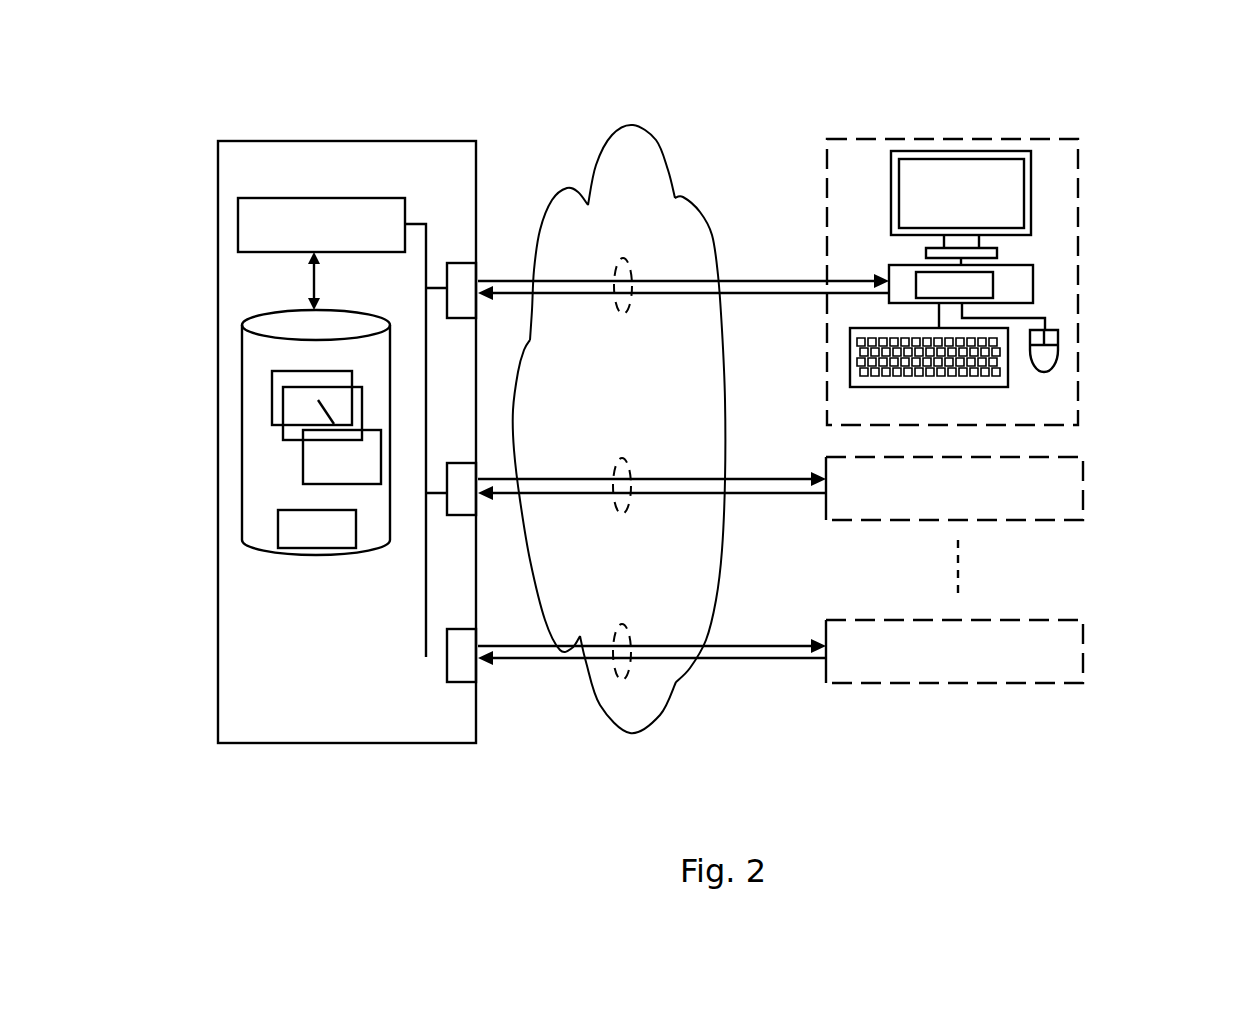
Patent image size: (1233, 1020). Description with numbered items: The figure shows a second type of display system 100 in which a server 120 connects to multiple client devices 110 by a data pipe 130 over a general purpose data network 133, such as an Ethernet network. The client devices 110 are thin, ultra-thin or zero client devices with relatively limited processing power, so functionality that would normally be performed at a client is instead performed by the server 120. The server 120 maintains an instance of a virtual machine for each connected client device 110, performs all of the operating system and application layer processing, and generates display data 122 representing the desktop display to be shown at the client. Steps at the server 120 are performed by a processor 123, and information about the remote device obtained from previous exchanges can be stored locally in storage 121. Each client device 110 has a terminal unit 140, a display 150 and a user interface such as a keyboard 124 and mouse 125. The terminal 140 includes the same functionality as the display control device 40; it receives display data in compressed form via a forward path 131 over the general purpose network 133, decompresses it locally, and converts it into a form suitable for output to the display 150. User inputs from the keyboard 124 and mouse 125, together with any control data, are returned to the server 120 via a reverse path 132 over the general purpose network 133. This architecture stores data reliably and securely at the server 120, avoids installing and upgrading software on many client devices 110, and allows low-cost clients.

The display system 100 is at (1141, 92).
The client device 110 is at (1080, 215).
The server 120 is at (421, 140).
The local storage 121 is at (240, 380).
The display data 122 is at (303, 455).
The processor 123 is at (238, 228).
The keyboard 124 is at (278, 530).
The mouse 125 is at (1059, 347).
The data pipe 130 is at (630, 266).
The forward path 131 is at (574, 279).
The reverse path 132 is at (591, 298).
The general purpose data network 133 is at (667, 160).
The terminal unit 140 is at (1034, 296).
The display 150 is at (984, 150).
The display control device 40 is at (993, 285).